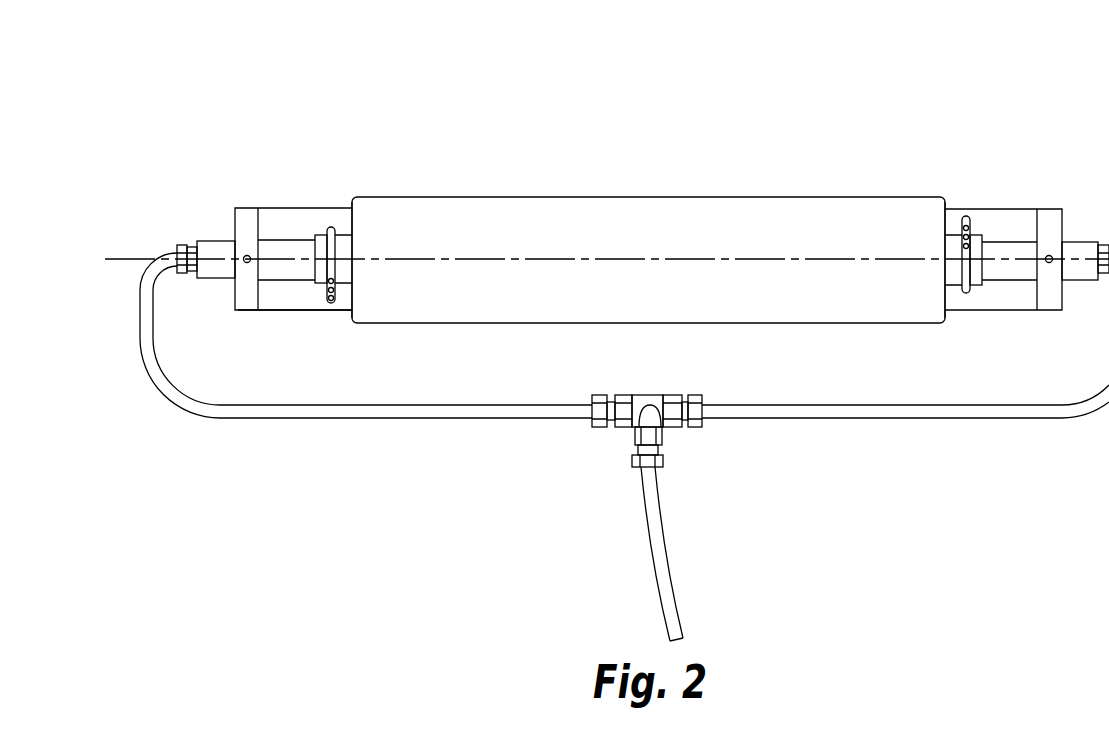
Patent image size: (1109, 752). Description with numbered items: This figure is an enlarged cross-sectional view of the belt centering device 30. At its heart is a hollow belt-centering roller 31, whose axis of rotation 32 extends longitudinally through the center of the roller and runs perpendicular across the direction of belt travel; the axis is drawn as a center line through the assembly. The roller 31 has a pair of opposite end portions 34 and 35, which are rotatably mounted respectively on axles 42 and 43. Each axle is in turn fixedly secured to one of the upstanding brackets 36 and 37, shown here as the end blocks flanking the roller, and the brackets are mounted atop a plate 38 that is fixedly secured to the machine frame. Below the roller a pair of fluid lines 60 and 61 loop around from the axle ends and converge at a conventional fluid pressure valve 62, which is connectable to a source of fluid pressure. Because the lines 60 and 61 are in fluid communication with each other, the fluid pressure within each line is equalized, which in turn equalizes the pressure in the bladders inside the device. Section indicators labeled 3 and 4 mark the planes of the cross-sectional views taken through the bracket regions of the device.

The belt centering device 30 is at (752, 93).
The belt-centering roller 31 is at (508, 197).
The axis of rotation 32 is at (117, 257).
The end portion 34 is at (382, 210).
The end portion 35 is at (920, 196).
The upstanding bracket 36 is at (242, 208).
The upstanding bracket 37 is at (1050, 208).
The plate 38 is at (277, 311).
The axle 42 is at (210, 241).
The axle 43 is at (1077, 281).
The fluid line 60 is at (412, 419).
The fluid line 61 is at (817, 419).
The fluid pressure valve 62 is at (660, 420).
The section line 3- 3 is at (1003, 185).
The section line 4- 4 is at (287, 259).